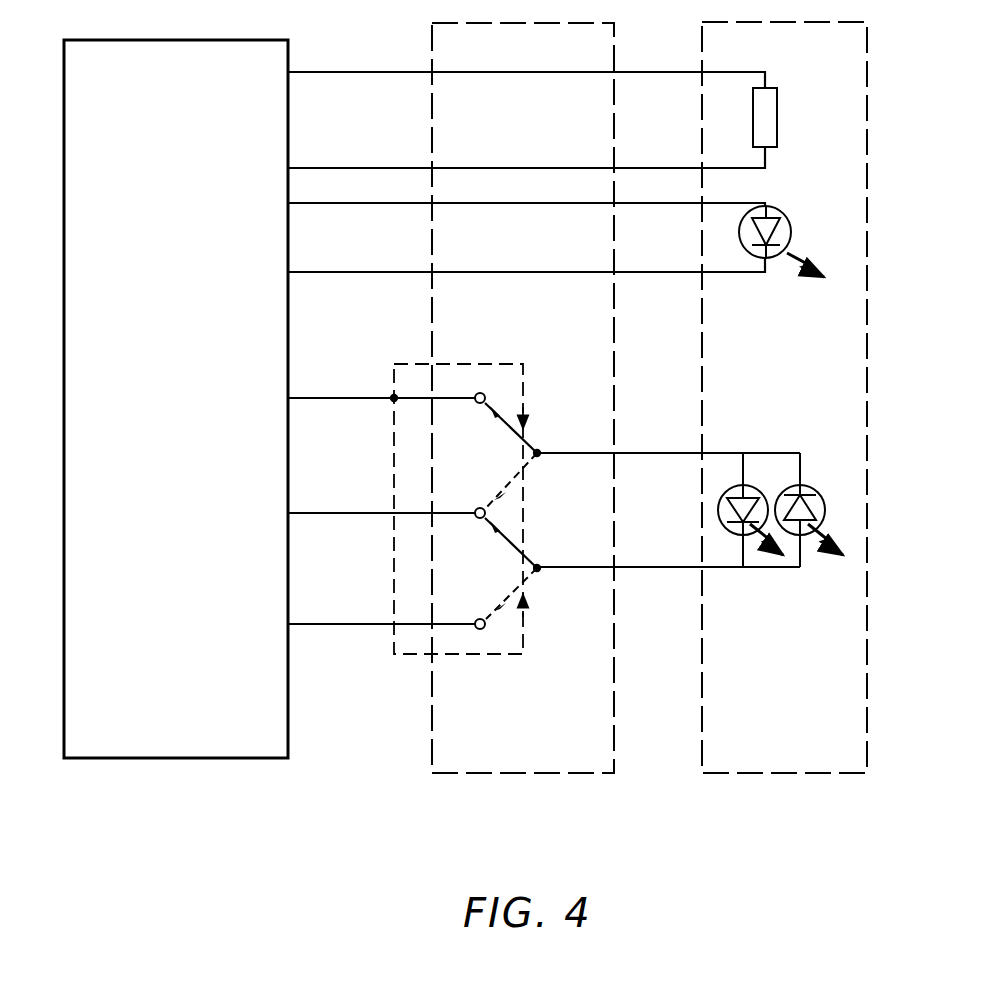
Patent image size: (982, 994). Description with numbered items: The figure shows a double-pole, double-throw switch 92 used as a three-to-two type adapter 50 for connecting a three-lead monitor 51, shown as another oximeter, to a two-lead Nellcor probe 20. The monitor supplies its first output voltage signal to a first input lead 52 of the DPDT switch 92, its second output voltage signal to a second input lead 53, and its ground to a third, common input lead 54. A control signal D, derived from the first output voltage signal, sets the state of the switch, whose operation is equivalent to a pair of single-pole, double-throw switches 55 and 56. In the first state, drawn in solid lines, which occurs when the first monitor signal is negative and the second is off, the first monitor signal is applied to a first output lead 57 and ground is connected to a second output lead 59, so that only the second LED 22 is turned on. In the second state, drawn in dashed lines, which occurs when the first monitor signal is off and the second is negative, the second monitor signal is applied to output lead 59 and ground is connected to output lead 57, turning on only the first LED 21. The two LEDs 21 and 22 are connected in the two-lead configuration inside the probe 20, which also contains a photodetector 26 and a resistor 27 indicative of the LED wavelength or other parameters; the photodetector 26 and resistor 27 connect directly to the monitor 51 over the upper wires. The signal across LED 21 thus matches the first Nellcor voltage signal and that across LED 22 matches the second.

The 3-lead monitor 51 is at (176, 432).
The adapter 50 is at (523, 421).
The 2-lead probe 20 is at (784, 421).
The resistor 27 is at (768, 118).
The photodetector 26 is at (781, 216).
The double-pole, double-throw switch 92 is at (380, 450).
The first input lead 52 is at (386, 379).
The third (common) input lead 54 is at (386, 492).
The second input lead 53 is at (386, 598).
The single-pole, double-throw switch 55 is at (533, 437).
The single-pole, double-throw switch 56 is at (526, 532).
The first output lead 57 is at (668, 428).
The second output lead 59 is at (668, 546).
The first LED 21 is at (756, 510).
The second LED 22 is at (818, 509).